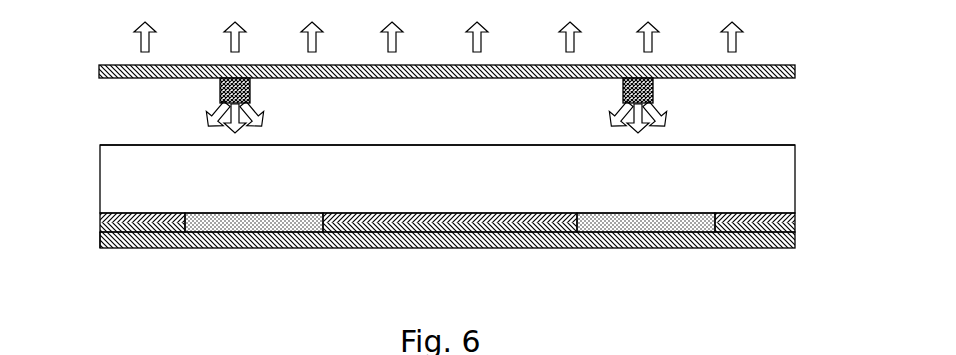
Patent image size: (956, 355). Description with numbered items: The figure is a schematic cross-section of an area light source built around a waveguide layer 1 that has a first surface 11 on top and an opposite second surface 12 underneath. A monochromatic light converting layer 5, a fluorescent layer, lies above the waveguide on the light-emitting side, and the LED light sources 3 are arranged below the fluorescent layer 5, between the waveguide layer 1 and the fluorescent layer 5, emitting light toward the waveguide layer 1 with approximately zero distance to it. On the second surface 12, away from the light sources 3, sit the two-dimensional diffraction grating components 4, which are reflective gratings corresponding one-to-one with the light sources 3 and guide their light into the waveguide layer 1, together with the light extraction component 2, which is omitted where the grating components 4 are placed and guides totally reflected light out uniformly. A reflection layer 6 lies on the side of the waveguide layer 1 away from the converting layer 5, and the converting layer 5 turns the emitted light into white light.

The waveguide layer 1 is at (787, 181).
The light extraction component 2 is at (152, 248).
The light sources 3 is at (250, 90).
The two-dimensional diffraction grating components 4 is at (293, 248).
The monochromatic light converting layer 5 is at (795, 71).
The reflection layer 6 is at (795, 240).
The first surface 11 is at (128, 145).
The second surface 12 is at (100, 232).